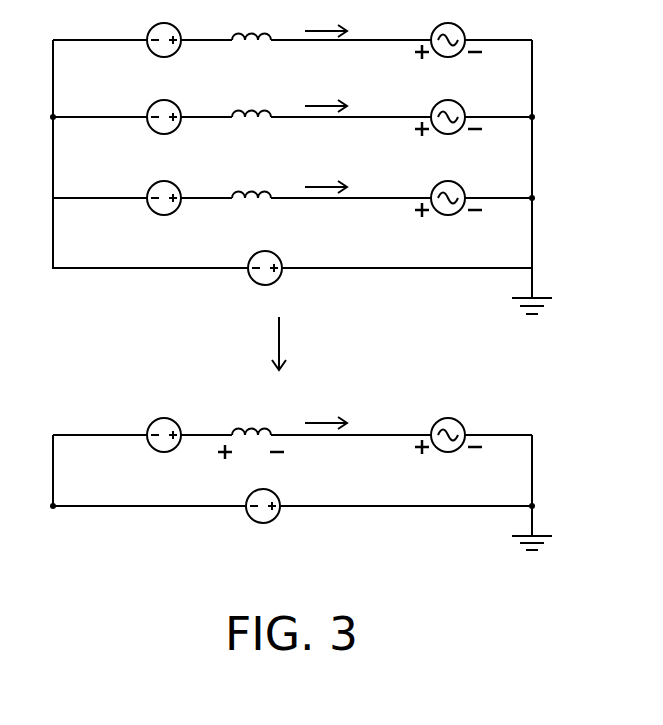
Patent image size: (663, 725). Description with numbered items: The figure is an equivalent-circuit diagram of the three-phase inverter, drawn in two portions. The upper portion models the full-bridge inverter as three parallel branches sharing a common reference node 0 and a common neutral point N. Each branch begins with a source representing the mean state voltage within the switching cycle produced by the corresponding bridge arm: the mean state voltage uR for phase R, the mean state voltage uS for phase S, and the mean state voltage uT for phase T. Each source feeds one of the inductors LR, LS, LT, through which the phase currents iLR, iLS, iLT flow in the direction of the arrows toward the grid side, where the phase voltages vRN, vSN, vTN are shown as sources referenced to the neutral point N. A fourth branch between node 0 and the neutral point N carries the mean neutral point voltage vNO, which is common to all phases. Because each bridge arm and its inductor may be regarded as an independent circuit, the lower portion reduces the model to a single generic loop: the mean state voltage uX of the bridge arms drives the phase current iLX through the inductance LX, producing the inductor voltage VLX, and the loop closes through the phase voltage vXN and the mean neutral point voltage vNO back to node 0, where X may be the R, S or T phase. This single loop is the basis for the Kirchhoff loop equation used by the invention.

The mean state voltage of phase R uR is at (126, 14).
The mean state voltage of phase S uS is at (126, 91).
The mean state voltage of phase T uT is at (126, 170).
The mean state voltage of the bridge arms uX is at (146, 428).
The inductor of phase R LR is at (251, 24).
The inductor of phase S LS is at (251, 101).
The inductor of phase T LT is at (251, 181).
The inductance LX is at (251, 419).
The phase R inductor current iLR is at (322, 18).
The phase S inductor current iLS is at (322, 95).
The phase T inductor current iLT is at (322, 176).
The phase current iLX is at (322, 412).
The phase R voltage vRN is at (436, 49).
The phase S voltage vSN is at (436, 126).
The phase T voltage vTN is at (436, 207).
The phase voltage vXN is at (448, 449).
The mean neutral point voltage vNO is at (303, 522).
The inductor voltage VLX is at (251, 454).
The reference node 0 is at (39, 313).
The neutral point N is at (537, 327).